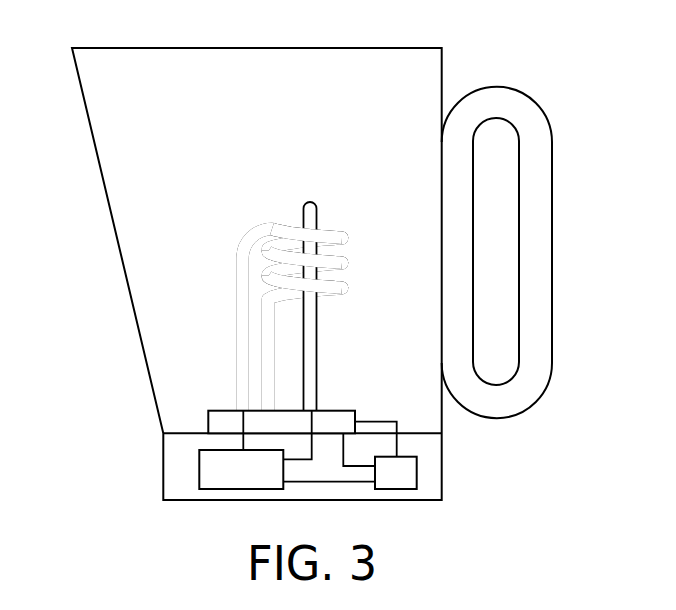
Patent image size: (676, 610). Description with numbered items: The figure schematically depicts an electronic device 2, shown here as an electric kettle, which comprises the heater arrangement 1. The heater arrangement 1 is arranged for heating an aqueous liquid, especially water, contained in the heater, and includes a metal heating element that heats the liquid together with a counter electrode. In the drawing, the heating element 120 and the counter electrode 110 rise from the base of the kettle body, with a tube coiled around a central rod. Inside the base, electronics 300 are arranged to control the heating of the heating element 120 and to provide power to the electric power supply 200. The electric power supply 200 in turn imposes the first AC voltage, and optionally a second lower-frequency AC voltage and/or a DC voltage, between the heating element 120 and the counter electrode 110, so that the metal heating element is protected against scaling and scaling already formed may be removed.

The heater arrangement 1 is at (108, 322).
The electronic device 2 is at (552, 110).
The heating element 110 is at (313, 204).
The counter electrode 120 is at (253, 267).
The electrical power supply 200 is at (188, 471).
The electronics 300 is at (425, 485).